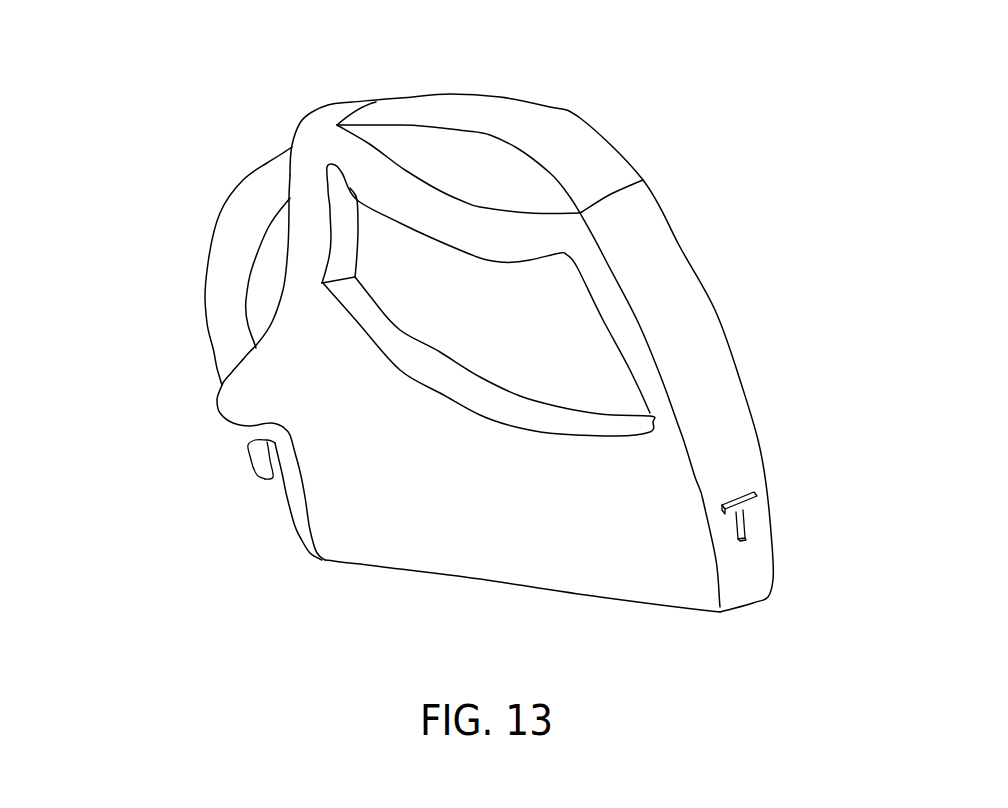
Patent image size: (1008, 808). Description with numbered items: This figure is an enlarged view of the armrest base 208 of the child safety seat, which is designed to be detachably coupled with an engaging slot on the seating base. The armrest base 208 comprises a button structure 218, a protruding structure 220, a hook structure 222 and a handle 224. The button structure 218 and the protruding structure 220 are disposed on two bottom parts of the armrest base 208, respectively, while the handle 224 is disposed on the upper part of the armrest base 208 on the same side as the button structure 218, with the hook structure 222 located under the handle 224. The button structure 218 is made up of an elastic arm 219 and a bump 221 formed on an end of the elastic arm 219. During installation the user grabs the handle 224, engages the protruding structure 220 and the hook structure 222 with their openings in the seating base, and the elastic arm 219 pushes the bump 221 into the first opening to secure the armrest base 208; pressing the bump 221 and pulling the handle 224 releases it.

The armrest base 208 is at (472, 306).
The button structure 218 is at (191, 503).
The elastic arm 219 is at (295, 520).
The protruding structure 220 is at (740, 500).
The bump 221 is at (258, 462).
The hook structure 222 is at (247, 397).
The handle 224 is at (245, 213).